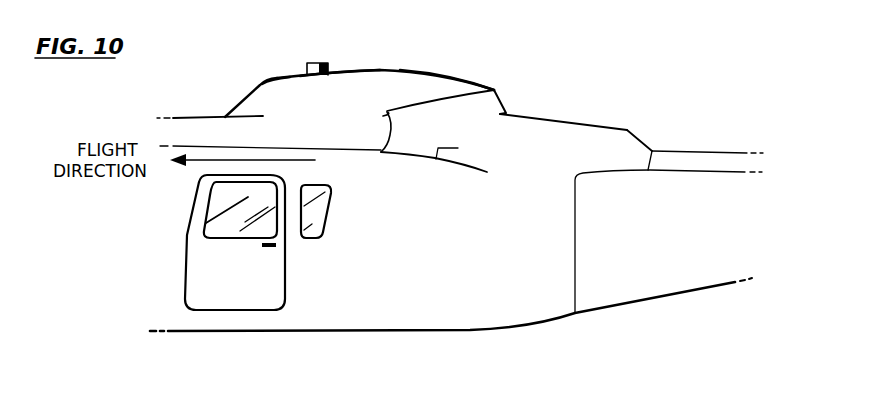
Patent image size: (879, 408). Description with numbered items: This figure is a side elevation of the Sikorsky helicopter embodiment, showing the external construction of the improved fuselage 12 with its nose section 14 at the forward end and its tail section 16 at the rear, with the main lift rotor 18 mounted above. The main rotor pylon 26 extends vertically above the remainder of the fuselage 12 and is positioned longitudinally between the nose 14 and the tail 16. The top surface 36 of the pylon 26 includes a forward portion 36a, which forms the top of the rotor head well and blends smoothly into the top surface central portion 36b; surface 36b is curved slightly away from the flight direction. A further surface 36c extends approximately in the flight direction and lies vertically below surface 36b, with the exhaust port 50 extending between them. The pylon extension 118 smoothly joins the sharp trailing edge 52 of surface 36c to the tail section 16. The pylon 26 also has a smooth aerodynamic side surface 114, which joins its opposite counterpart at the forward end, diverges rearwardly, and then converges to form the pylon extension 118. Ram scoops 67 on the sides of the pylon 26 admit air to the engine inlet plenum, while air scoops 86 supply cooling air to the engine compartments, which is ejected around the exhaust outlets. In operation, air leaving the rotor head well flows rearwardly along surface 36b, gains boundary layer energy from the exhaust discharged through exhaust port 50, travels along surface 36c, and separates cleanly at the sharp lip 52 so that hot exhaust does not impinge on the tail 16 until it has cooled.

The fuselage 12 is at (351, 292).
The nose section 14 is at (161, 250).
The tail section 16 is at (686, 238).
The main lift rotor 18 is at (330, 69).
The main rotor pylon 26 is at (235, 104).
The top surface 36 is at (396, 62).
The forward portion 36a is at (278, 78).
The top surface central portion 36b is at (438, 76).
The surface 36c is at (602, 126).
The exhaust port 50 is at (502, 97).
The sharp trailing edge 52 is at (636, 136).
The ram scoops 67 is at (390, 136).
The air scoops 86 is at (436, 160).
The aerodynamic side surface 114 is at (372, 100).
The pylon extension 118 is at (650, 144).